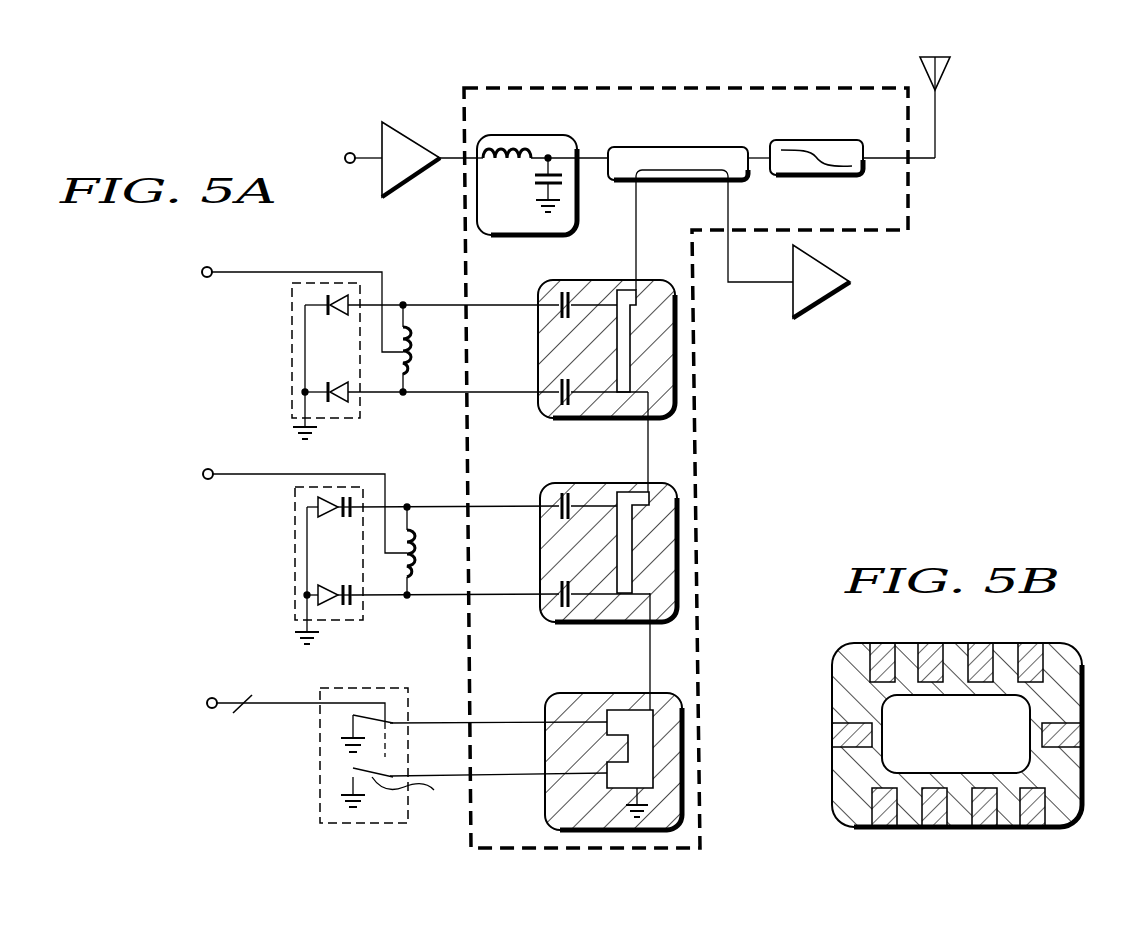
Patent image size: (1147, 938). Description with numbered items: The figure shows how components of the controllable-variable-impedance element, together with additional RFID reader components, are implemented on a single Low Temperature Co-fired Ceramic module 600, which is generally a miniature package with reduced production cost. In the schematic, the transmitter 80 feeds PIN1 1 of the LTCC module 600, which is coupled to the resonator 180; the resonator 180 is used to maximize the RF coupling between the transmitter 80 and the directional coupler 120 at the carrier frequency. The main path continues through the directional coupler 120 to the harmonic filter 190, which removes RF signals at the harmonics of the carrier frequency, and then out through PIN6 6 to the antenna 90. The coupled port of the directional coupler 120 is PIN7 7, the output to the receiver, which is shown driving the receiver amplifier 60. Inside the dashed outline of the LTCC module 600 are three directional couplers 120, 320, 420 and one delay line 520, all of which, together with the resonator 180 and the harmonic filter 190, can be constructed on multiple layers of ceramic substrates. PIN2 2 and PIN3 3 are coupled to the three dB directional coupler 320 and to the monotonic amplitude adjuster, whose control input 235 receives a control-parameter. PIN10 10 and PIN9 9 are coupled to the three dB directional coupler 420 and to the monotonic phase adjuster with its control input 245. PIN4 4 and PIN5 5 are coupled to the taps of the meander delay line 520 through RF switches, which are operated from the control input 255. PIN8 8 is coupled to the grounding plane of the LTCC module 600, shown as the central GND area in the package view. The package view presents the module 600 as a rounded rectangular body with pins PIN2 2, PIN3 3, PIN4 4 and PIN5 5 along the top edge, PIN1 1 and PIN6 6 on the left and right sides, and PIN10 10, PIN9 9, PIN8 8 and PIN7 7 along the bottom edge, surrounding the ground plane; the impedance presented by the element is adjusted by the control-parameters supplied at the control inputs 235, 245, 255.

In FIG. 5A, the transmitter 80 is at (405, 127).
In FIG. 5A, the PIN1 1 is at (458, 146).
In FIG. 5B, the PIN1 1 is at (844, 735).
In FIG. 5A, the resonator 180 is at (503, 236).
In FIG. 5A, the directional coupler 120 is at (615, 181).
In FIG. 5A, the harmonic filter 190 is at (864, 140).
In FIG. 5A, the PIN6 6 is at (899, 146).
In FIG. 5B, the PIN6 6 is at (1071, 735).
In FIG. 5A, the antenna 90 is at (945, 70).
In FIG. 5A, the LTCC module 600 is at (887, 233).
In FIG. 5B, the LTCC module 600 is at (1050, 614).
In FIG. 5A, the receiver amplifier 60 is at (818, 308).
In FIG. 5A, the directional coupler 320 is at (676, 350).
In FIG. 5A, the directional coupler 420 is at (678, 553).
In FIG. 5A, the delay line 520 is at (683, 762).
In FIG. 5A, the PIN2 2 is at (482, 298).
In FIG. 5B, the PIN2 2 is at (882, 647).
In FIG. 5A, the PIN3 3 is at (498, 385).
In FIG. 5B, the PIN3 3 is at (930, 647).
In FIG. 5A, the PIN4 4 is at (498, 708).
In FIG. 5B, the PIN4 4 is at (980, 647).
In FIG. 5A, the PIN5 5 is at (498, 760).
In FIG. 5B, the PIN5 5 is at (1030, 647).
In FIG. 5B, the PIN7 7 is at (1032, 822).
In FIG. 5B, the PIN8 8 is at (984, 822).
In FIG. 5A, the PIN9 9 is at (501, 587).
In FIG. 5B, the PIN9 9 is at (934, 822).
In FIG. 5A, the PIN10 10 is at (484, 499).
In FIG. 5B, the PIN10 10 is at (886, 822).
In FIG. 5A, the control input 235 is at (212, 277).
In FIG. 5A, the control input 245 is at (213, 479).
In FIG. 5A, the control input 255 is at (232, 704).